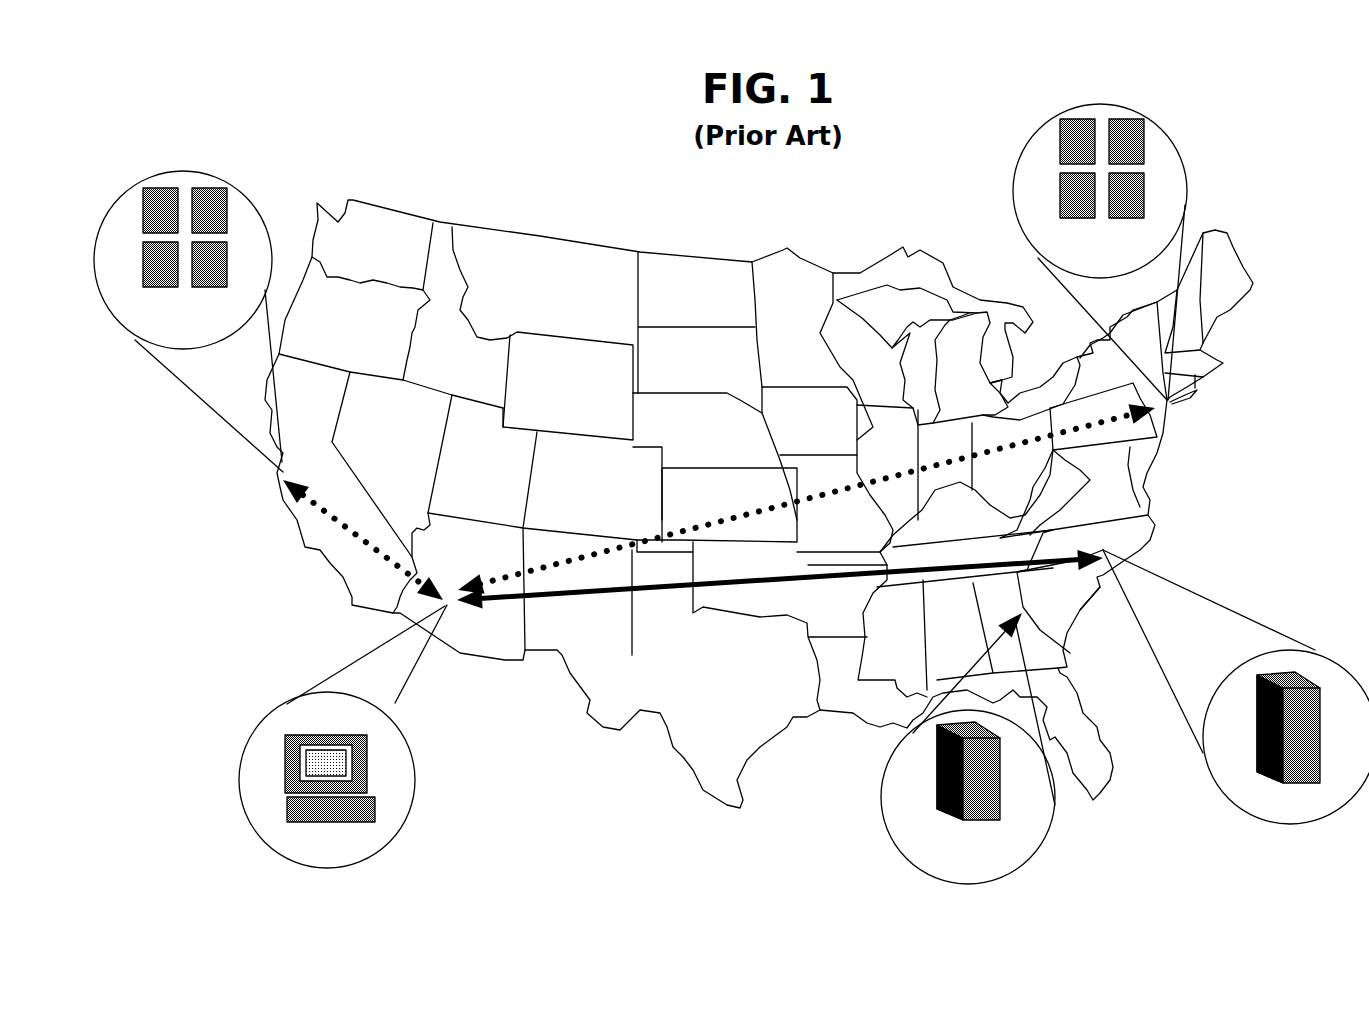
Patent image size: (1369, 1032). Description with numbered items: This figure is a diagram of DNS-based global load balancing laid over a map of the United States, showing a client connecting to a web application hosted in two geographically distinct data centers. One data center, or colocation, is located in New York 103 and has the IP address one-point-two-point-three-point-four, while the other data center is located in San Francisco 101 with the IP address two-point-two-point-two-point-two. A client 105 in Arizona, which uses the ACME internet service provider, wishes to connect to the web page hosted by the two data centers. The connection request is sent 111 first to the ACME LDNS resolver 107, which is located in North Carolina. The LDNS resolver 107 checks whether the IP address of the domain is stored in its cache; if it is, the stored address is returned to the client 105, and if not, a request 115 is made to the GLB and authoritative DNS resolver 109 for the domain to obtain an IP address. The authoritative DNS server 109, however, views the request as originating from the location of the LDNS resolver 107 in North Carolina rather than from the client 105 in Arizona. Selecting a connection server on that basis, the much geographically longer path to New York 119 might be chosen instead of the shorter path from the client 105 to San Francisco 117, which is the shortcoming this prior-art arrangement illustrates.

The data center in San Francisco 101 is at (160, 159).
The data center in New York 103 is at (1076, 87).
The client 105 is at (303, 664).
The ACME LDNS resolver 107 is at (1281, 629).
The authoritative DNS server 109 is at (831, 815).
The request sent to LDNS resolver 111 is at (758, 590).
The request to authoritative DNS resolver 115 is at (1043, 600).
The path from client to San Francisco 117 is at (343, 552).
The path to New York 119 is at (864, 470).